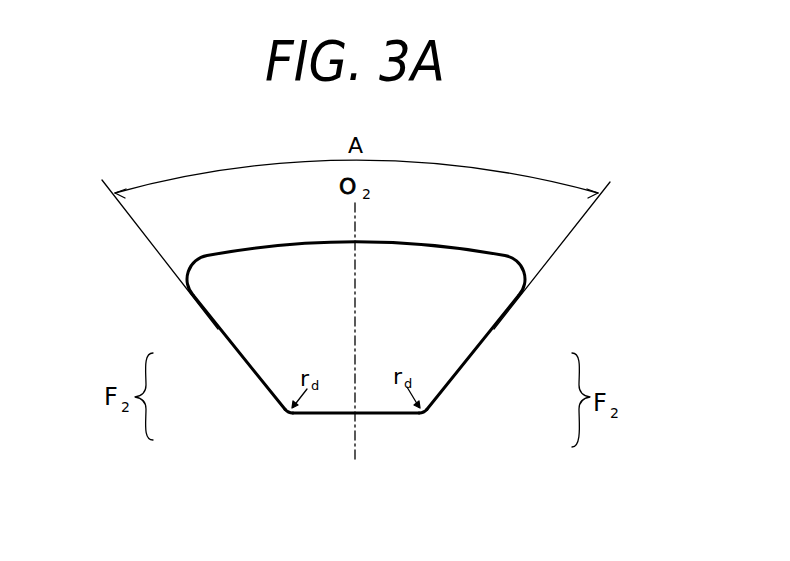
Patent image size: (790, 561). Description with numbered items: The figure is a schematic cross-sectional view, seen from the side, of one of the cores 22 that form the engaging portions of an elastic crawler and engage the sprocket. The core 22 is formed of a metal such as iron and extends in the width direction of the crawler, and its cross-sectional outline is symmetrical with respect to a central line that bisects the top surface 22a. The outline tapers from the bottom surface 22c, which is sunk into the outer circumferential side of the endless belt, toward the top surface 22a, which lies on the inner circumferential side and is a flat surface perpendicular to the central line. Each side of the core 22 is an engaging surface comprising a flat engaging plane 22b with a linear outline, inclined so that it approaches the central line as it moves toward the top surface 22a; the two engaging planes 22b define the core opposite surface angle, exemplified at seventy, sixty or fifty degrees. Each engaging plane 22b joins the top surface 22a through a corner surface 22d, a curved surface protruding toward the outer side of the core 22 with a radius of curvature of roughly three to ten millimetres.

The core 22 is at (363, 348).
The top surface 22a is at (370, 415).
The engaging plane 22b is at (223, 339).
The bottom surface 22c is at (420, 245).
The corner surface 22d is at (290, 412).